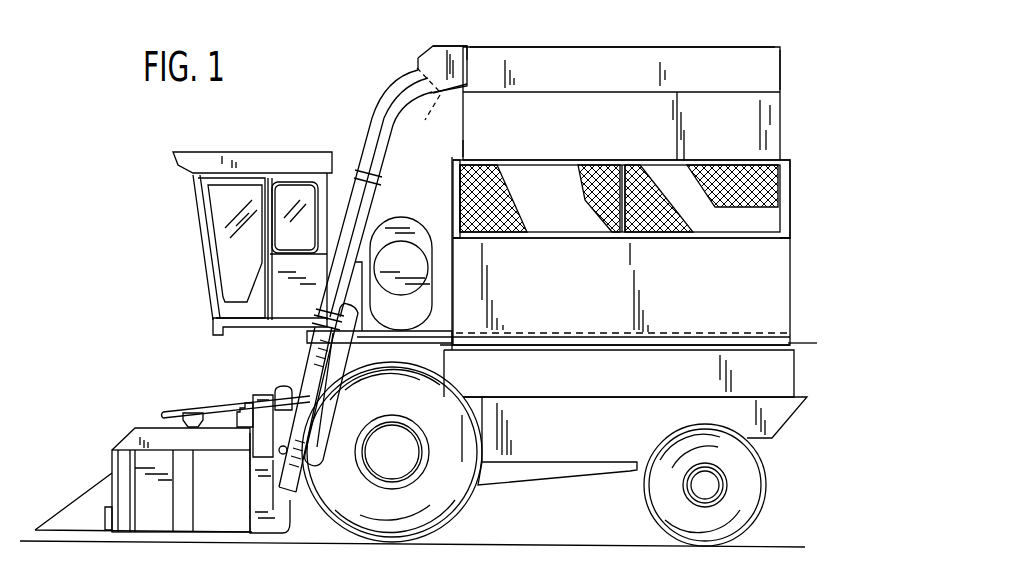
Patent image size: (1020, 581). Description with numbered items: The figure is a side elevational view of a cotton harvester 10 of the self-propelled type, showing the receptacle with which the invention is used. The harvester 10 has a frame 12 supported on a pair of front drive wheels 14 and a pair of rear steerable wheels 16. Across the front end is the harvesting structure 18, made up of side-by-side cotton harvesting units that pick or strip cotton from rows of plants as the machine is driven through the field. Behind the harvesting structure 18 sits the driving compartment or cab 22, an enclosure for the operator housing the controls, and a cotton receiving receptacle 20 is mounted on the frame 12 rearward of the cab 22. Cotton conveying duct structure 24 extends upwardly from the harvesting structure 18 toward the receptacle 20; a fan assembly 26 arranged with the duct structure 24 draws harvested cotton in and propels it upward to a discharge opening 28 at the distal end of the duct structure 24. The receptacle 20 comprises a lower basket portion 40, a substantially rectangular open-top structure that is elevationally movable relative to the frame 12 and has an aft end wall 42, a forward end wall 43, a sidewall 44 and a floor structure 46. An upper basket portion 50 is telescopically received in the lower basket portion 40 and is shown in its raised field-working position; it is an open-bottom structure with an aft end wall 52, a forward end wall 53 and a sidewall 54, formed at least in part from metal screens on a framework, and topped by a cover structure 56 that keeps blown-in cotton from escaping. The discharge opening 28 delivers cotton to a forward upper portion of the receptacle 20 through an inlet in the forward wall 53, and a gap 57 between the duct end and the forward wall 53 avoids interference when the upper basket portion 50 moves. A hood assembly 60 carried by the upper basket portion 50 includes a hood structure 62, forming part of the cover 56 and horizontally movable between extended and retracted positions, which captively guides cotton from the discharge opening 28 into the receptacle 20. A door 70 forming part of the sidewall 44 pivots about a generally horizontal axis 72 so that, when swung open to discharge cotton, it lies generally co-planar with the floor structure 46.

The cotton harvester 10 is at (230, 134).
The frame 12 is at (527, 474).
The front drive wheels 14 is at (455, 498).
The rear steerable wheels 16 is at (750, 480).
The harvesting structure 18 is at (121, 428).
The cotton receiving receptacle 20 is at (785, 98).
The driving compartment or cab 22 is at (228, 262).
The duct structure 24 is at (372, 108).
The fan assembly 26 is at (358, 280).
The discharge opening 28 is at (422, 107).
The lower basket portion 40 is at (786, 222).
The aft end wall 42 is at (790, 178).
The forward end wall 43 is at (453, 205).
The sidewall 44 is at (738, 227).
The floor structure 46 is at (715, 332).
The upper basket portion 50 is at (772, 122).
The aft end wall 52 is at (780, 68).
The forward end wall 53 is at (463, 143).
The sidewall 54 is at (765, 145).
The top or cover structure 56 is at (700, 47).
The gap or opening 57 is at (450, 98).
The hood assembly 60 is at (441, 40).
The hood structure 62 is at (458, 53).
The door 70 is at (708, 287).
The horizontal axis 72 is at (800, 343).